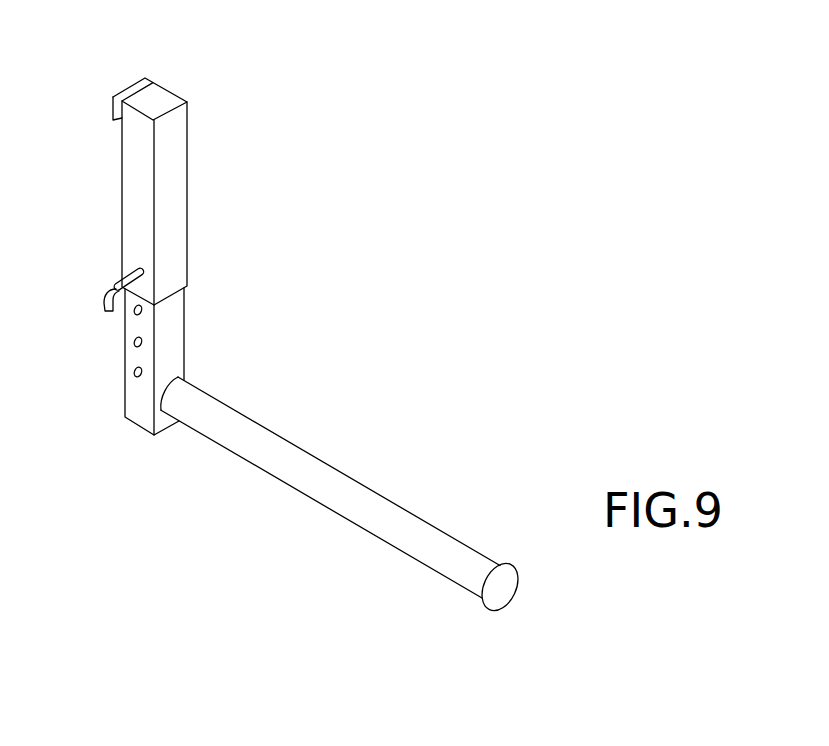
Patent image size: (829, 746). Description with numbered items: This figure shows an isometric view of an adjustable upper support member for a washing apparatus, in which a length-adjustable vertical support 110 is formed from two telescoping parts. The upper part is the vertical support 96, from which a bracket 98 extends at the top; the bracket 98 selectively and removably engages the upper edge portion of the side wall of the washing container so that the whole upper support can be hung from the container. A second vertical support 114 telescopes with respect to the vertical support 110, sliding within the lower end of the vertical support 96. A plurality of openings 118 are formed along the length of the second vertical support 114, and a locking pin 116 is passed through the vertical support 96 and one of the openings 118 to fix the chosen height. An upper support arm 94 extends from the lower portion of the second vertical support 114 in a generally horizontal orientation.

The upper support arm 94 is at (392, 515).
The vertical support 96 is at (177, 207).
The bracket 98 is at (130, 86).
The vertical support 110 is at (205, 272).
The second vertical support 114 is at (180, 348).
The locking pin 116 is at (114, 286).
The openings 118 is at (127, 358).